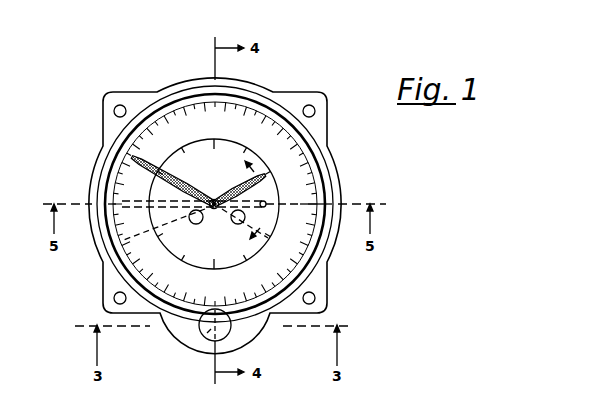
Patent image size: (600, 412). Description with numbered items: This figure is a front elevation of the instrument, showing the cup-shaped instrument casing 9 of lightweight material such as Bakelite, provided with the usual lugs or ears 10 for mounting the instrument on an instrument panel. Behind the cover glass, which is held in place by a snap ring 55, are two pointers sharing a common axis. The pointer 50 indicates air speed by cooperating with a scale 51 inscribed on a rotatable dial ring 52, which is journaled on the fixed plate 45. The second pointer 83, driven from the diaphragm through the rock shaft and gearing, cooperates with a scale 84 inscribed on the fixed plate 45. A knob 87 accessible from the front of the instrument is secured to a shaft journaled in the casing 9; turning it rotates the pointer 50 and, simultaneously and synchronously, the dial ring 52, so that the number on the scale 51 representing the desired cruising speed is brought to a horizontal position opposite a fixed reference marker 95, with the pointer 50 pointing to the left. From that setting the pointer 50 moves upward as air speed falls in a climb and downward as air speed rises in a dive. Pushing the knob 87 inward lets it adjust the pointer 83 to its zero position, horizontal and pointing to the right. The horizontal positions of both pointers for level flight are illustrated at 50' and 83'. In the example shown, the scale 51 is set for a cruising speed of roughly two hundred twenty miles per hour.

The instrument casing 9 is at (99, 183).
The lugs or ears 10 is at (110, 112).
The fixed plate 45 is at (211, 262).
The pointer 50 is at (145, 169).
The horizontal position of pointer 50' is at (147, 240).
The scale 51 is at (253, 113).
The dial ring 52 is at (233, 321).
The snap ring 55 is at (315, 158).
The pointer 83 is at (288, 163).
The horizontal position of pointer 83' is at (299, 242).
The scale 84 is at (302, 204).
The knob 87 is at (207, 333).
The fixed reference marker 95 is at (110, 203).